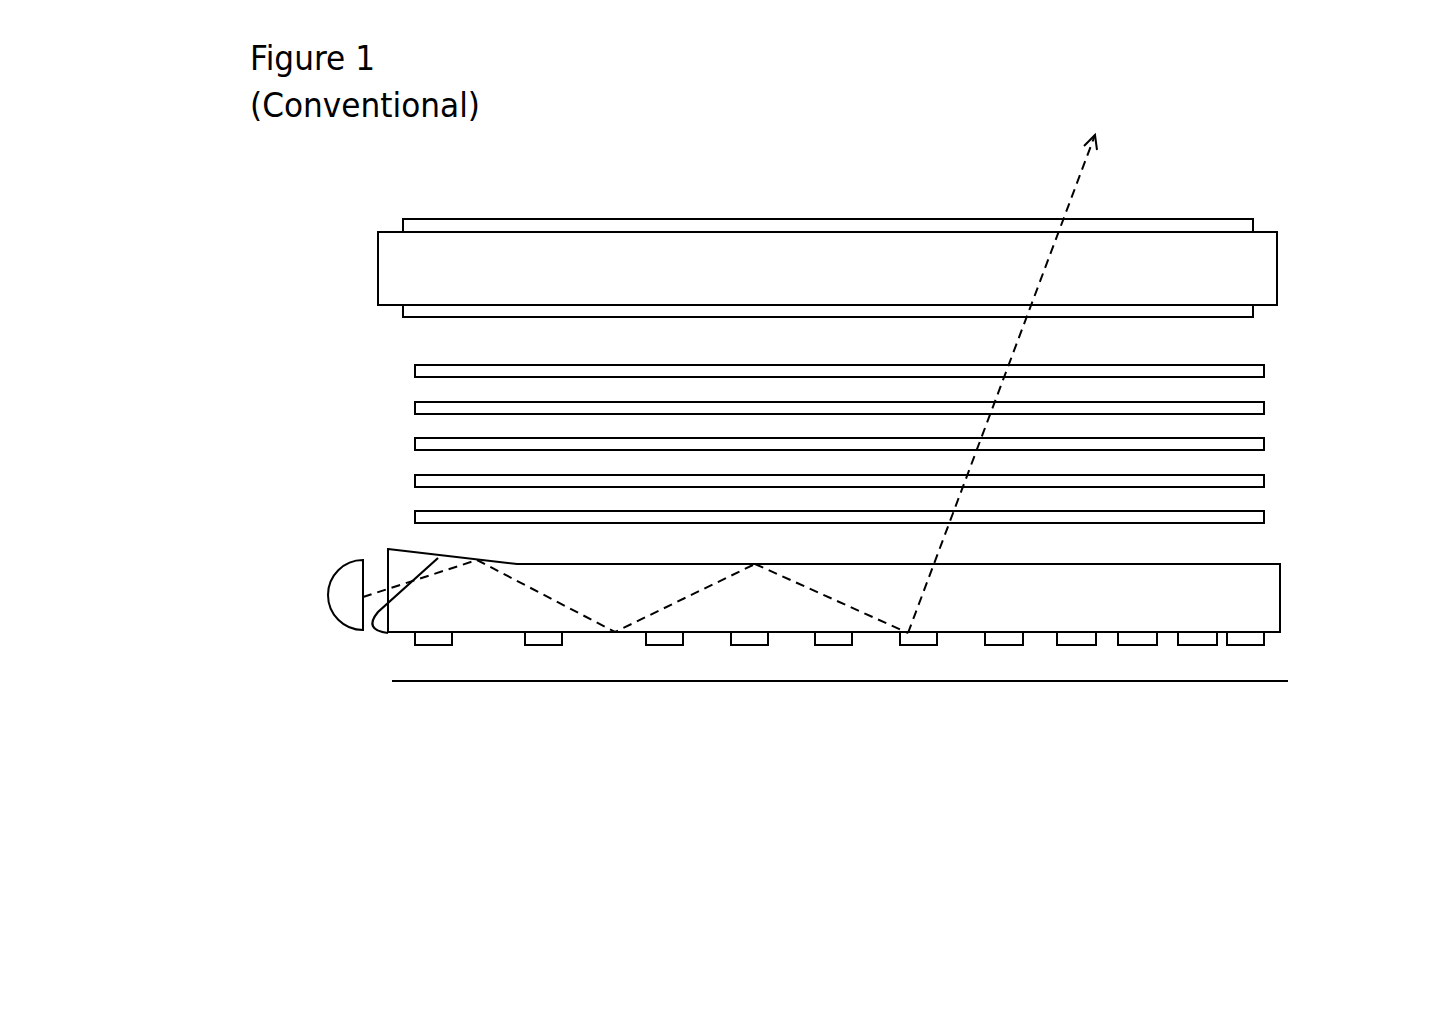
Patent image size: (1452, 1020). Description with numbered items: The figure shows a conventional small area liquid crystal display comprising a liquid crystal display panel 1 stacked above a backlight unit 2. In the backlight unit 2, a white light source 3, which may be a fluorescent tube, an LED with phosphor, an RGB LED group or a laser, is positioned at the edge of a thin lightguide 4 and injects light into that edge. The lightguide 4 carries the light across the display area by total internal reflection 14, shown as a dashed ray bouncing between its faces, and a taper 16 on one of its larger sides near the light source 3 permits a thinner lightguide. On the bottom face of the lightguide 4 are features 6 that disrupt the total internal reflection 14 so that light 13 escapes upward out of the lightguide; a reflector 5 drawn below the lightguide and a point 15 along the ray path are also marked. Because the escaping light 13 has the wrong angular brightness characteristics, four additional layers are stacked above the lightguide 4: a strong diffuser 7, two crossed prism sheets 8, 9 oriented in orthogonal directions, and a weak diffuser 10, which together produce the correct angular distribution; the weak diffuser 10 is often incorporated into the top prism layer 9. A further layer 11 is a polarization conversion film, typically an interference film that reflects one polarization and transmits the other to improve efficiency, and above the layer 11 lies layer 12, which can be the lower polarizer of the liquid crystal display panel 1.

The liquid crystal display panel 1 is at (855, 273).
The backlight unit 2 is at (807, 548).
The white light source 3 is at (310, 585).
The lightguide 4 is at (1165, 607).
The reflector sheet 5 is at (472, 678).
The features 6 is at (665, 642).
The strong diffuser 7 is at (415, 515).
The prism sheet 8 is at (415, 480).
The prism sheet 9 is at (415, 445).
The weak diffuser 10 is at (415, 405).
The polarization conversion film 11 is at (415, 370).
The lower polarizer 12 is at (430, 305).
The light 13 is at (1075, 188).
The total internal reflection 14 is at (600, 633).
The light scattering point 15 is at (910, 632).
The taper 16 is at (388, 633).